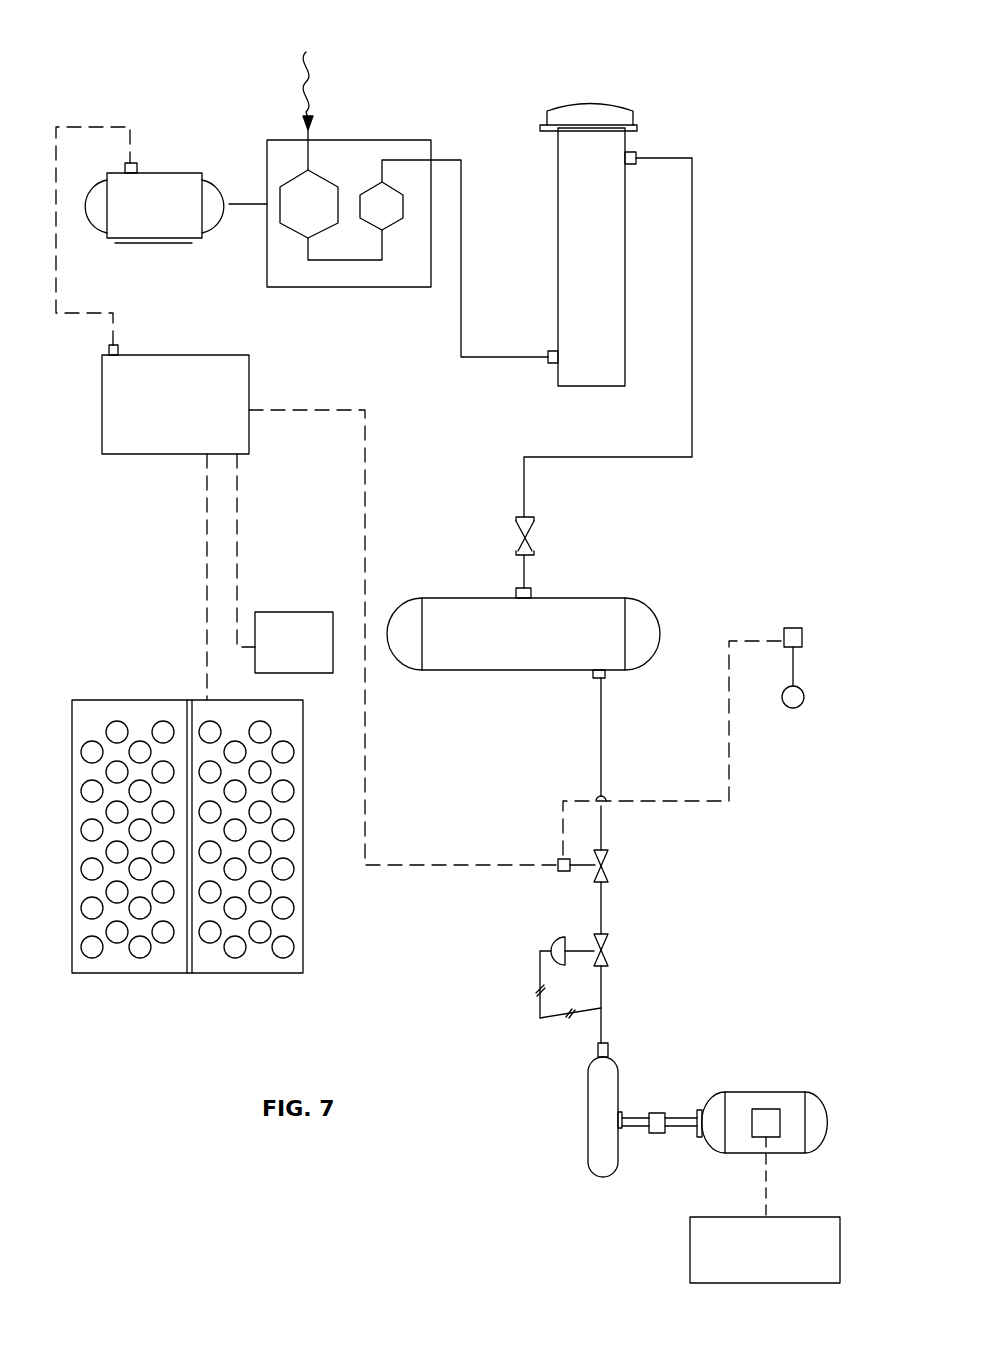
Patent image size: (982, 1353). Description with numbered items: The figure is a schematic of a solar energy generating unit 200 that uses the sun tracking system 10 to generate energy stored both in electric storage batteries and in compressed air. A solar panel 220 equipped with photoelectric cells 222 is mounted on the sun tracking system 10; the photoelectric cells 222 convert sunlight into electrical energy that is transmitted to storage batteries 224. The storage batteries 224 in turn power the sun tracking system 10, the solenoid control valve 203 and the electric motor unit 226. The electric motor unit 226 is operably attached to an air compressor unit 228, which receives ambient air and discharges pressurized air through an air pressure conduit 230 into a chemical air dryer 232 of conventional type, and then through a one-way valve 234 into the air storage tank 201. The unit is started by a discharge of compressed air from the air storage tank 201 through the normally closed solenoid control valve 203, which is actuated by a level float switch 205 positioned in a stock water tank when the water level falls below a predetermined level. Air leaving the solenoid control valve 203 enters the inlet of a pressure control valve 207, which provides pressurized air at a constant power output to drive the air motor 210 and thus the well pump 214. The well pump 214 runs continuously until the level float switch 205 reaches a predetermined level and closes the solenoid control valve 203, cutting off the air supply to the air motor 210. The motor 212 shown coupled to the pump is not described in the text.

The sun tracking system 10 is at (303, 612).
The solar energy generating unit 200 is at (683, 50).
The air storage tank 201 is at (578, 608).
The solenoid control valve 203 is at (612, 866).
The level float switch 205 is at (793, 628).
The pressure control valve 207 is at (612, 952).
The air motor 210 is at (605, 1180).
The motor 212 is at (740, 1098).
The well pump 214 is at (697, 1247).
The solar panel 220 is at (305, 908).
The photoelectric cells 222 is at (286, 947).
The storage batteries 224 is at (152, 437).
The electric motor unit 226 is at (212, 192).
The air compressor unit 228 is at (395, 140).
The air pressure conduit 230 is at (512, 357).
The chemical air dryer 232 is at (605, 150).
The one-way valve 234 is at (522, 534).